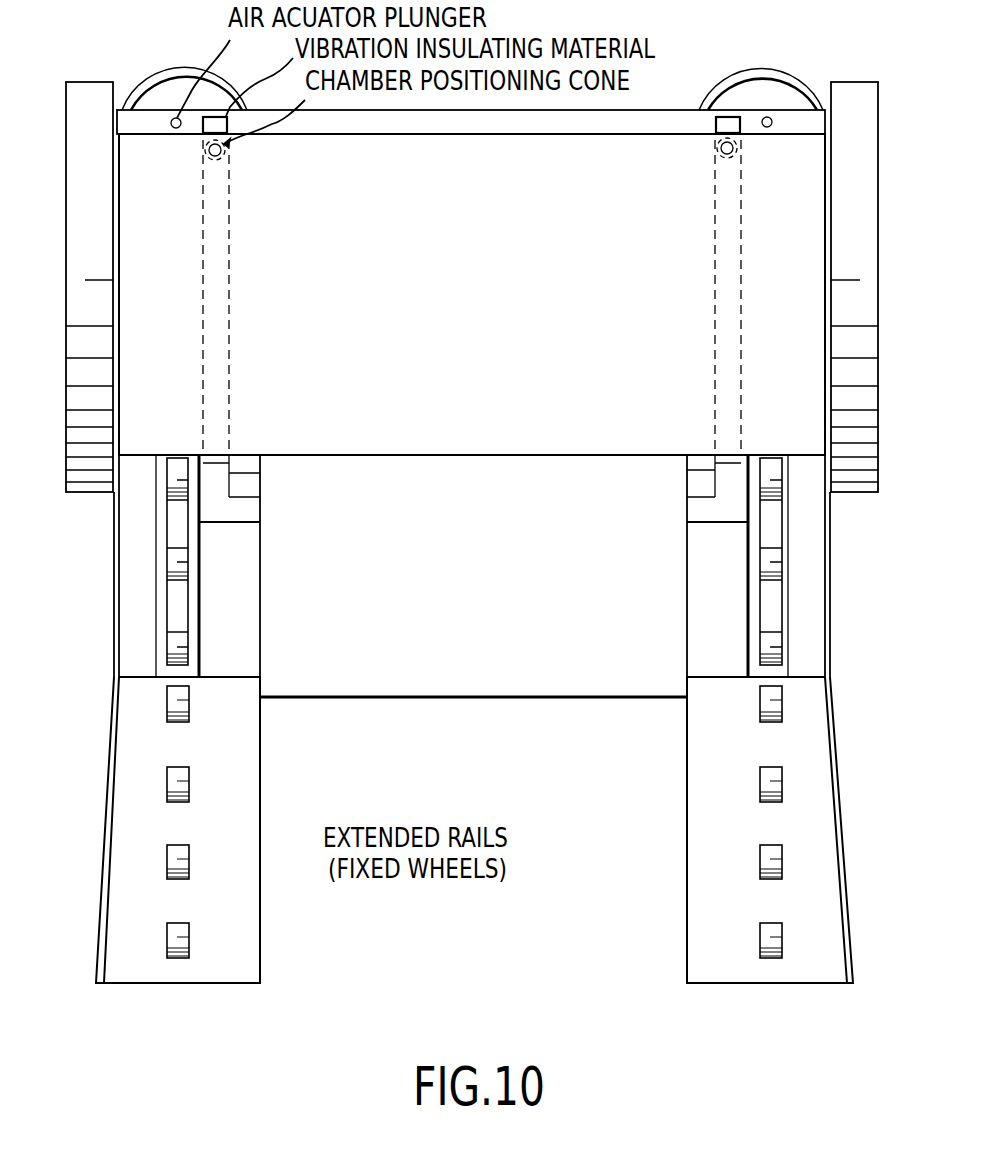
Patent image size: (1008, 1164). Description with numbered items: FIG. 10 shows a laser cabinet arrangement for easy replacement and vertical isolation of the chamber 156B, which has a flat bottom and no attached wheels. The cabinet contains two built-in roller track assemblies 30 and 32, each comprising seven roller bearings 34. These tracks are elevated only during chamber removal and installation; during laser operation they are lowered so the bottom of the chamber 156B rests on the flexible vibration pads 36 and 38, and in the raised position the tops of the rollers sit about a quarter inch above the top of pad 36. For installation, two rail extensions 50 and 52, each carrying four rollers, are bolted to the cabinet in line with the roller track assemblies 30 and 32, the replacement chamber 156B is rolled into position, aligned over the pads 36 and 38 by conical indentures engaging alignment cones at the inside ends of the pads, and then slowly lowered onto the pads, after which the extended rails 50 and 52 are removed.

The roller track assembly 30 is at (157, 623).
The roller track assembly 32 is at (790, 588).
The roller bearing 34 is at (188, 652).
The flexible pad 36 is at (229, 255).
The pad 38 is at (713, 230).
The rail extension 50 is at (262, 803).
The rail extension 52 is at (839, 776).
The chamber 156B is at (493, 330).